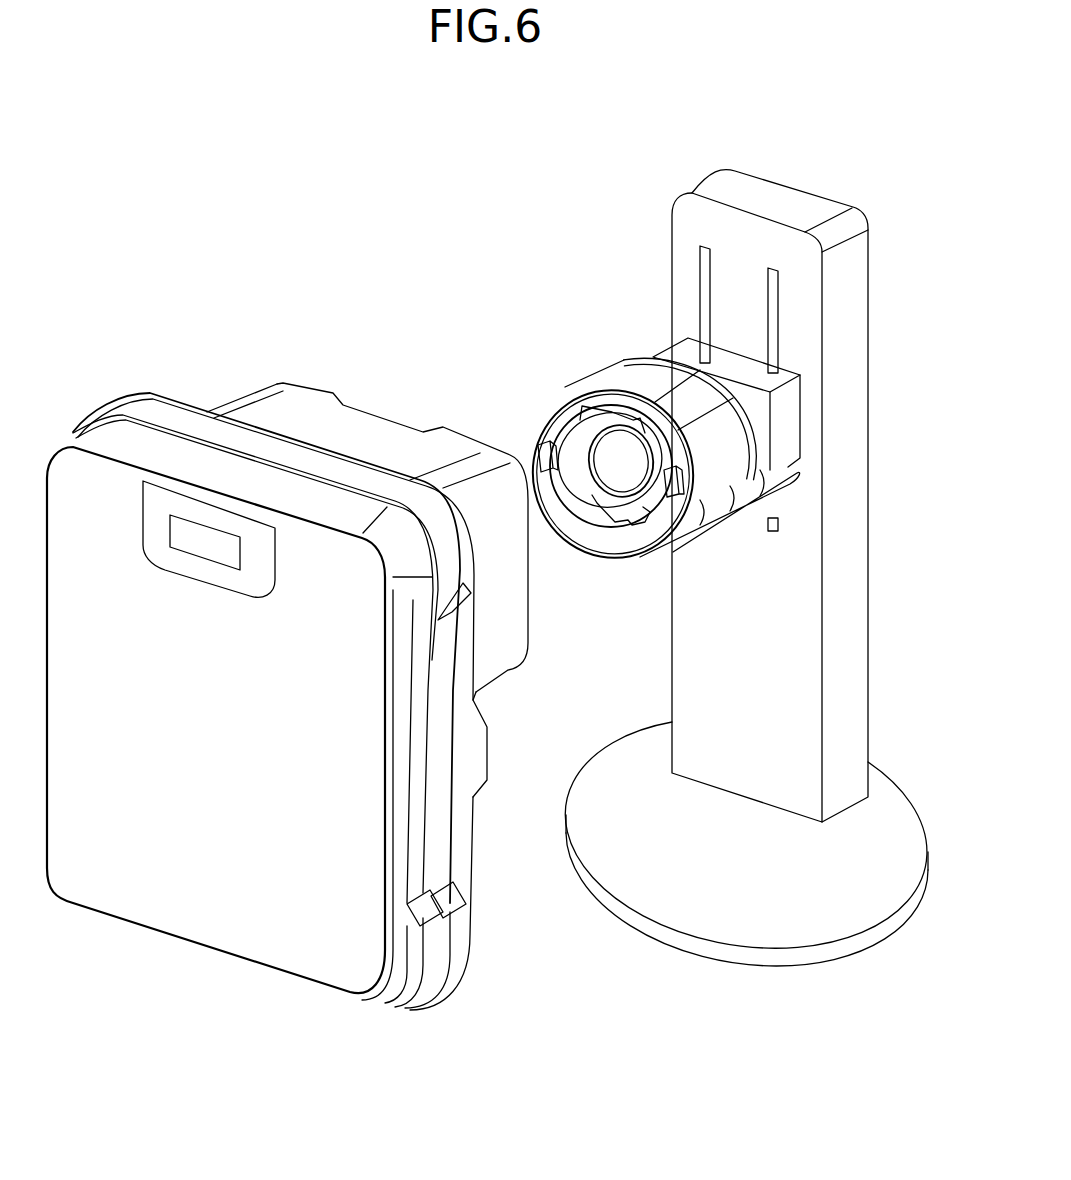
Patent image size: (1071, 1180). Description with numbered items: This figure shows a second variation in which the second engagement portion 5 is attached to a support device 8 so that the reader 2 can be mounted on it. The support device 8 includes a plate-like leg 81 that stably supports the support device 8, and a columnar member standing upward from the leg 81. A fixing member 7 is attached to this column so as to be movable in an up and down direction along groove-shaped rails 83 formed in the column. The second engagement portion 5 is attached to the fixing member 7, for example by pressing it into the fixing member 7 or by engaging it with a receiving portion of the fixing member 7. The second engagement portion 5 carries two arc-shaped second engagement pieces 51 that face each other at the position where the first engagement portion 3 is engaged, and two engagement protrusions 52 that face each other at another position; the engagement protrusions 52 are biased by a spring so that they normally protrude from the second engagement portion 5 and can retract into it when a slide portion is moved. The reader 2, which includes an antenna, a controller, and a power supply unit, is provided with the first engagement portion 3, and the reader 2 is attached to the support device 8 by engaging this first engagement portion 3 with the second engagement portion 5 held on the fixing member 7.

The reader 2 is at (168, 920).
The first engagement portion 3 is at (373, 427).
The second engagement portion 5 is at (628, 375).
The second engagement piece 51 is at (607, 405).
The engagement protrusion 52 is at (536, 447).
The fixing member 7 is at (745, 367).
The support device 8 is at (746, 576).
The leg 81 is at (731, 920).
The groove-shaped rail 83 is at (703, 270).